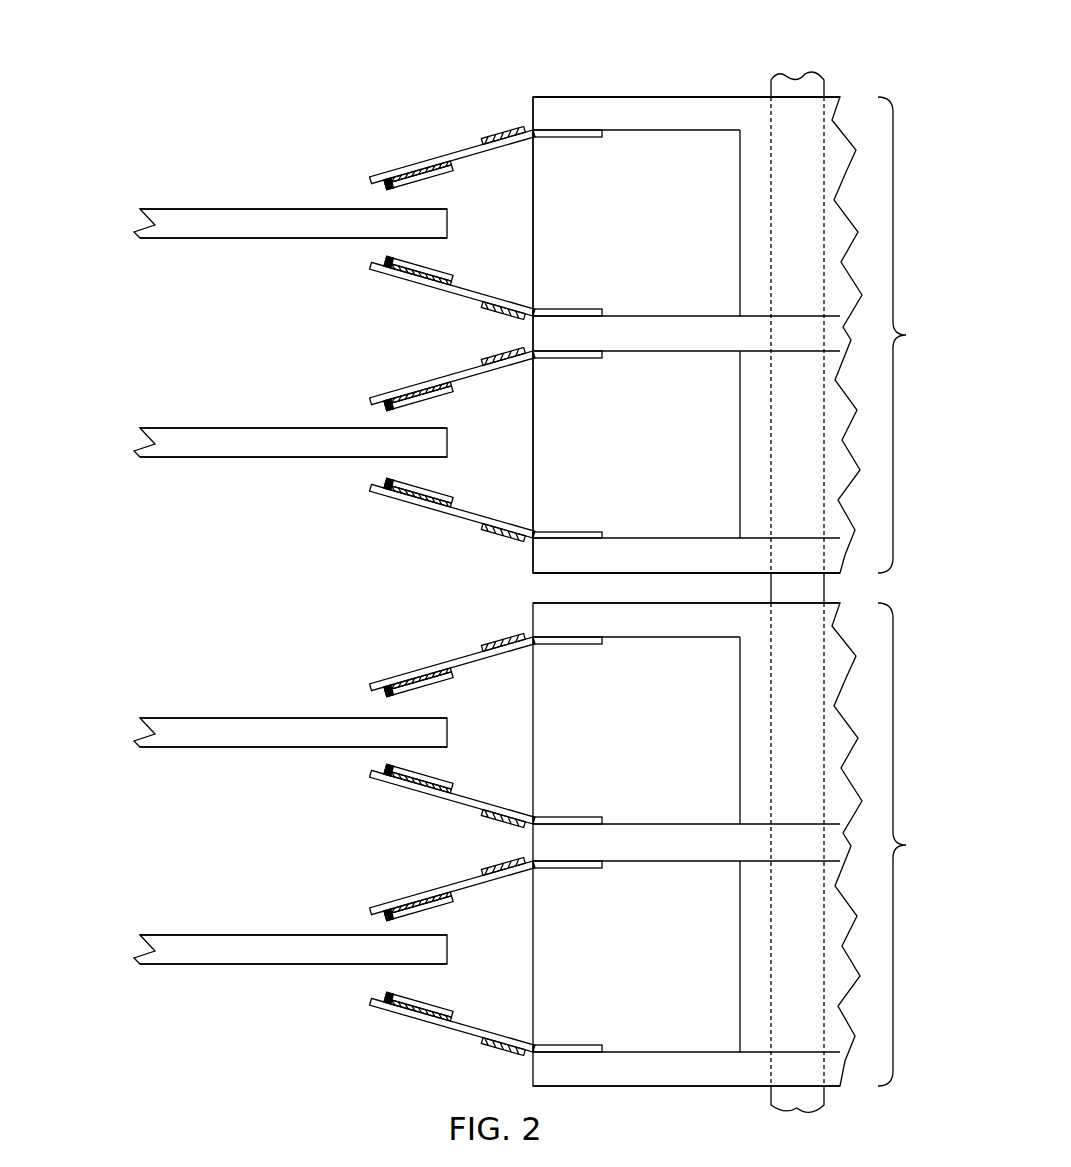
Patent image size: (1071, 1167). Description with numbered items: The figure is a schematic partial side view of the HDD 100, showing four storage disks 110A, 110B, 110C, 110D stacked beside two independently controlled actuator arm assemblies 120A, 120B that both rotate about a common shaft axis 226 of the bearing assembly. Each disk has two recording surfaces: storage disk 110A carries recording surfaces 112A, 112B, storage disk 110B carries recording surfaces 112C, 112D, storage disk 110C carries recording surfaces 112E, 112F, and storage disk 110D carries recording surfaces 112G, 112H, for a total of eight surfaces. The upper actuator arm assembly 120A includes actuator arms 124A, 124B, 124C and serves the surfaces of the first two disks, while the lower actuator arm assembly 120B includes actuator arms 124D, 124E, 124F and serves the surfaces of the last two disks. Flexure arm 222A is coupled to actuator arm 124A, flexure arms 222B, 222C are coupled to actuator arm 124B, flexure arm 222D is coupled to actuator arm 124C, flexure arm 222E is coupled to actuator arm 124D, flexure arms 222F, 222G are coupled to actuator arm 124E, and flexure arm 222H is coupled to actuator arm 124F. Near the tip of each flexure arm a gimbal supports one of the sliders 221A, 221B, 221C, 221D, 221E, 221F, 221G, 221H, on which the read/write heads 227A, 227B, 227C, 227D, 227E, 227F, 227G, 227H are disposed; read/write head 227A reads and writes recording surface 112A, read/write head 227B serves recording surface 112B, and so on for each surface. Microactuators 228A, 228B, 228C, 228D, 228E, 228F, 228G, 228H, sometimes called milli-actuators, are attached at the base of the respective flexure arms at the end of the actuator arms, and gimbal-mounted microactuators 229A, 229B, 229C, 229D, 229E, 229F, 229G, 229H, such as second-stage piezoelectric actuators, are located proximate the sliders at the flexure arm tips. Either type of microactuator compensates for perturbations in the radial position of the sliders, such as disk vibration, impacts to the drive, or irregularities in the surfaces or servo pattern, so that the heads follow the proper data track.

The HDD 100 is at (199, 45).
The storage disk 110A is at (100, 224).
The storage disk 110B is at (100, 443).
The storage disk 110C is at (100, 733).
The storage disk 110D is at (100, 950).
The recording surface 112A is at (247, 209).
The recording surface 112B is at (247, 238).
The recording surface 112C is at (247, 428).
The recording surface 112D is at (247, 457).
The recording surface 112E is at (247, 718).
The recording surface 112F is at (247, 747).
The recording surface 112G is at (247, 935).
The recording surface 112H is at (247, 964).
The actuator arm assembly 120A is at (906, 335).
The actuator arm assembly 120B is at (906, 845).
The actuator arm 124A is at (670, 125).
The actuator arm 124B is at (670, 348).
The actuator arm 124C is at (670, 569).
The actuator arm 124D is at (670, 634).
The actuator arm 124E is at (670, 855).
The actuator arm 124F is at (670, 1080).
The shaft axis 226 is at (771, 84).
The slider 221A is at (446, 174).
The slider 221B is at (446, 272).
The slider 221C is at (446, 395).
The slider 221D is at (446, 494).
The slider 221E is at (446, 681).
The slider 221F is at (446, 780).
The slider 221G is at (446, 905).
The slider 221H is at (446, 1008).
The flexure arm 222A is at (472, 145).
The flexure arm 222B is at (472, 300).
The flexure arm 222C is at (472, 367).
The flexure arm 222D is at (472, 522).
The flexure arm 222E is at (472, 652).
The flexure arm 222F is at (472, 808).
The flexure arm 222G is at (472, 877).
The flexure arm 222H is at (472, 1036).
The read/write head 227A is at (386, 182).
The read/write head 227B is at (386, 264).
The read/write head 227C is at (386, 403).
The read/write head 227D is at (386, 486).
The read/write head 227E is at (386, 689).
The read/write head 227F is at (386, 772).
The read/write head 227G is at (386, 913).
The read/write head 227H is at (386, 1000).
The microactuator 228A is at (500, 134).
The microactuator 228B is at (500, 312).
The microactuator 228C is at (500, 355).
The microactuator 228D is at (500, 534).
The microactuator 228E is at (500, 641).
The microactuator 228F is at (500, 820).
The microactuator 228G is at (500, 865).
The microactuator 228H is at (500, 1048).
The gimbal-mounted microactuator 229A is at (452, 162).
The gimbal-mounted microactuator 229B is at (452, 284).
The gimbal-mounted microactuator 229C is at (452, 383).
The gimbal-mounted microactuator 229D is at (452, 506).
The gimbal-mounted microactuator 229E is at (452, 669).
The gimbal-mounted microactuator 229F is at (452, 792).
The gimbal-mounted microactuator 229G is at (452, 893).
The gimbal-mounted microactuator 229H is at (452, 1020).